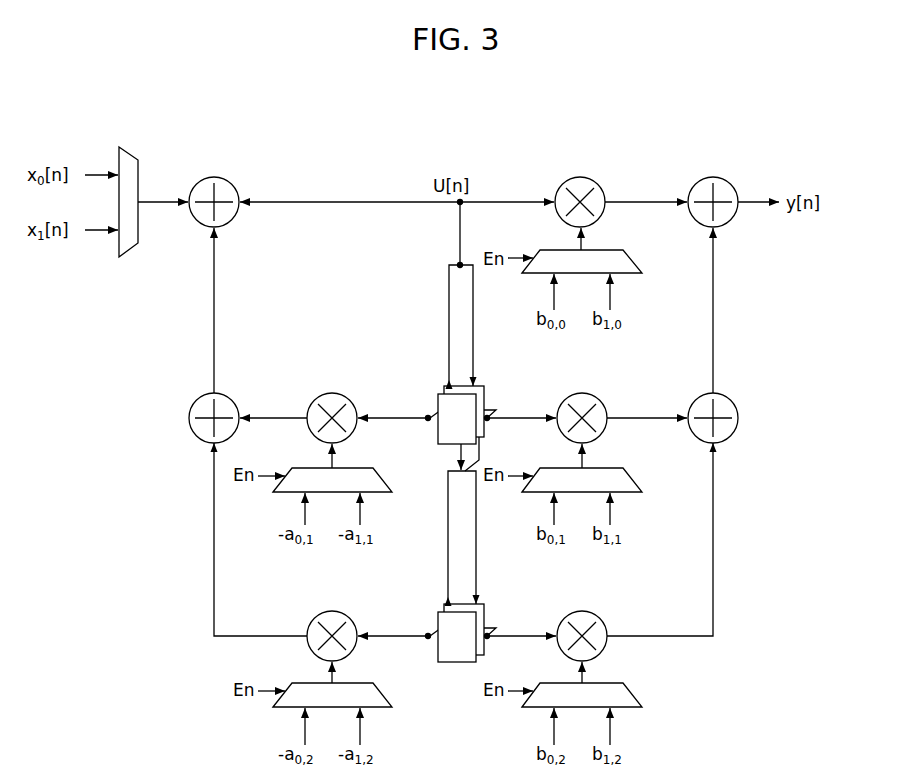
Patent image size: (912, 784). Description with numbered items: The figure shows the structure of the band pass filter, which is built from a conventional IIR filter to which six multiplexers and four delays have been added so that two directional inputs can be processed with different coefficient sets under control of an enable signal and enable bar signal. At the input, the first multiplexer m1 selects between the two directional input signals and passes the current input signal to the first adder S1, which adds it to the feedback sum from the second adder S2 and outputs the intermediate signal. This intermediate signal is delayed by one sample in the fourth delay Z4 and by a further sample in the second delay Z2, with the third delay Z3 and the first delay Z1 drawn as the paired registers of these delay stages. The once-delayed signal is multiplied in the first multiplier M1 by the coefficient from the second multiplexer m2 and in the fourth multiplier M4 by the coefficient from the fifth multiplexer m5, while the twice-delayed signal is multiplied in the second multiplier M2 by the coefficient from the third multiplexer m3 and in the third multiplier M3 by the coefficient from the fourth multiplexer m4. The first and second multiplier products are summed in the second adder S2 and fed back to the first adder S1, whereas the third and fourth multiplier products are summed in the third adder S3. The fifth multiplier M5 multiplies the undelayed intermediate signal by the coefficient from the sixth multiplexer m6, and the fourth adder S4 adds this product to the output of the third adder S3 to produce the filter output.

The first multiplexer m1 is at (134, 153).
The first adder S1 is at (229, 181).
The second adder S2 is at (192, 405).
The third adder S3 is at (736, 402).
The fourth adder S4 is at (734, 186).
The first multiplier M1 is at (332, 392).
The second multiplier M2 is at (308, 646).
The third multiplier M3 is at (603, 622).
The fourth multiplier M4 is at (600, 395).
The fifth multiplier M5 is at (598, 183).
The second multiplexer m2 is at (276, 496).
The third multiplexer m3 is at (377, 700).
The fourth multiplexer m4 is at (641, 699).
The fifth multiplexer m5 is at (636, 481).
The sixth multiplexer m6 is at (636, 259).
The first delay Z1 is at (456, 664).
The second delay Z2 is at (484, 612).
The third delay Z3 is at (438, 426).
The fourth delay Z4 is at (484, 396).